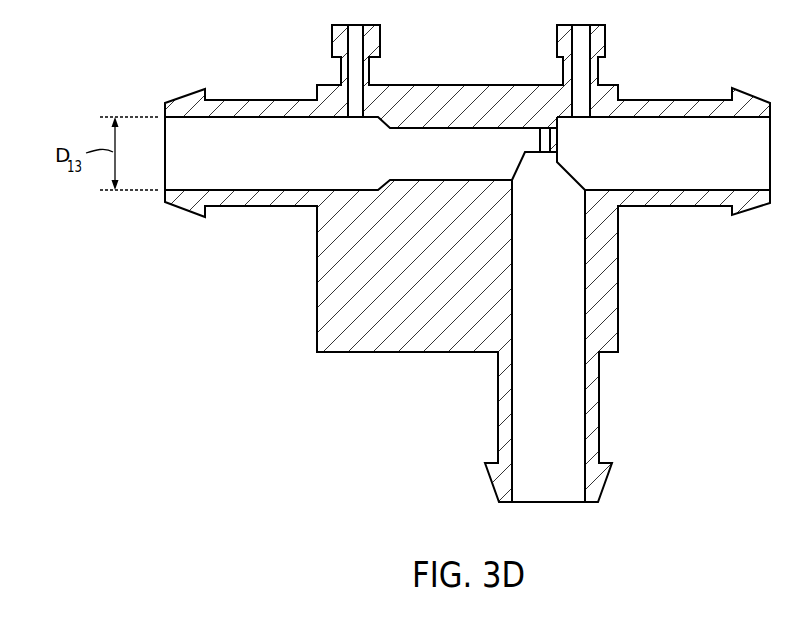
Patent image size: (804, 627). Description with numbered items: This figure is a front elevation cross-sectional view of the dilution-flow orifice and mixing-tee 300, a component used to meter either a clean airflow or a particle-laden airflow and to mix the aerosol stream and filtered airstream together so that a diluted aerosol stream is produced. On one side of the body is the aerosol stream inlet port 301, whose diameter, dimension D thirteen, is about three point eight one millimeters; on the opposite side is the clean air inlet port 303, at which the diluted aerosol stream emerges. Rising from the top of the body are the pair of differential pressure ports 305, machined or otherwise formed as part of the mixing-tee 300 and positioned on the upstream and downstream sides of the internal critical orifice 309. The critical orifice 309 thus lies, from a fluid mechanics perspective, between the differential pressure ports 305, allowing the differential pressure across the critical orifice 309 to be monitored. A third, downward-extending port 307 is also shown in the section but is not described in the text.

The dilution-flow orifice and mixing-tee 300 is at (621, 276).
The aerosol stream inlet port 301 is at (262, 100).
The clean air inlet port 303 is at (677, 100).
The differential pressure ports 305 is at (380, 42).
The third port 307 is at (600, 408).
The critical orifice 309 is at (548, 127).